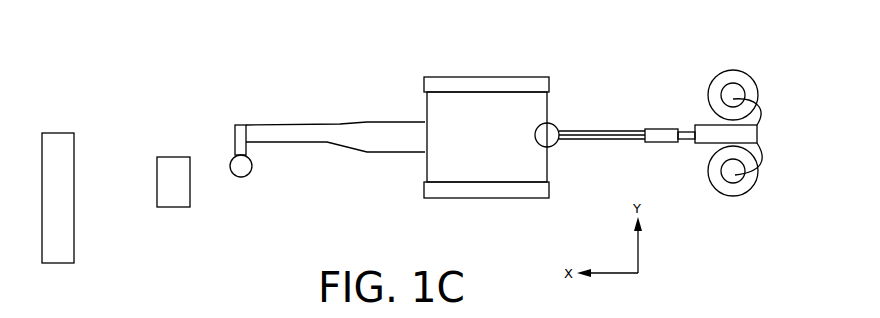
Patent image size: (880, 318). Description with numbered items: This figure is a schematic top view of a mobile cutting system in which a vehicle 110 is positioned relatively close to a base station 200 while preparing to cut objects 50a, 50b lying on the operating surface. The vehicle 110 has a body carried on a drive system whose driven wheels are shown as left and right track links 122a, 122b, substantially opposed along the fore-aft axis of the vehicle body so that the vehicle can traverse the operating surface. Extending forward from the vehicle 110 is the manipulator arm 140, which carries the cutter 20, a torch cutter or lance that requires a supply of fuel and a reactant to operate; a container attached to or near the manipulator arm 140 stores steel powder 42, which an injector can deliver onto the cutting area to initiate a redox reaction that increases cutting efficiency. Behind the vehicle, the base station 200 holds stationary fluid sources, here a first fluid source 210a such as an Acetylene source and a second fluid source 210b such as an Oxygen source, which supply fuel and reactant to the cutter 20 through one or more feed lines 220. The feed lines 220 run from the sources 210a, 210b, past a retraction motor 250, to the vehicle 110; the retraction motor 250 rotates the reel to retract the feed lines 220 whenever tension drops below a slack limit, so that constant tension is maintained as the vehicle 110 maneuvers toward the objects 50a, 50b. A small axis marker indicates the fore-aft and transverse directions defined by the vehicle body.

The cutter 20 is at (252, 163).
The steel powder 42 is at (658, 129).
The object 50a is at (56, 133).
The object 50b is at (172, 207).
The vehicle 110 is at (491, 120).
The left track link 122a is at (497, 198).
The right track link 122b is at (497, 77).
The manipulator arm 140 is at (322, 124).
The base station 200 is at (732, 114).
The first fluid source 210a is at (755, 182).
The second fluid source 210b is at (746, 73).
The feed lines 220 is at (592, 129).
The retraction motor 250 is at (688, 143).